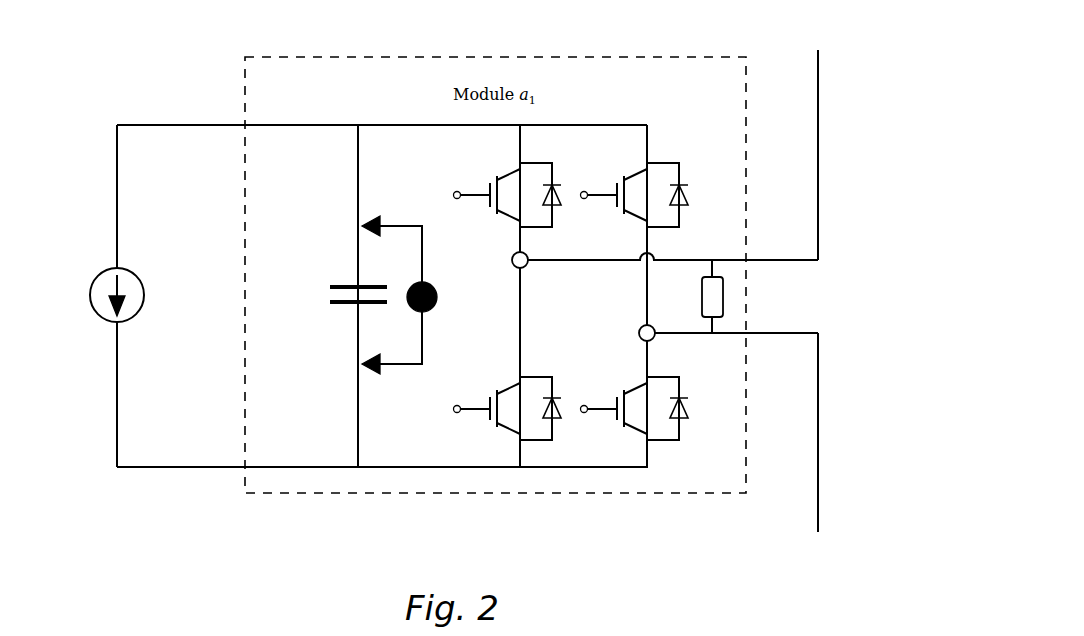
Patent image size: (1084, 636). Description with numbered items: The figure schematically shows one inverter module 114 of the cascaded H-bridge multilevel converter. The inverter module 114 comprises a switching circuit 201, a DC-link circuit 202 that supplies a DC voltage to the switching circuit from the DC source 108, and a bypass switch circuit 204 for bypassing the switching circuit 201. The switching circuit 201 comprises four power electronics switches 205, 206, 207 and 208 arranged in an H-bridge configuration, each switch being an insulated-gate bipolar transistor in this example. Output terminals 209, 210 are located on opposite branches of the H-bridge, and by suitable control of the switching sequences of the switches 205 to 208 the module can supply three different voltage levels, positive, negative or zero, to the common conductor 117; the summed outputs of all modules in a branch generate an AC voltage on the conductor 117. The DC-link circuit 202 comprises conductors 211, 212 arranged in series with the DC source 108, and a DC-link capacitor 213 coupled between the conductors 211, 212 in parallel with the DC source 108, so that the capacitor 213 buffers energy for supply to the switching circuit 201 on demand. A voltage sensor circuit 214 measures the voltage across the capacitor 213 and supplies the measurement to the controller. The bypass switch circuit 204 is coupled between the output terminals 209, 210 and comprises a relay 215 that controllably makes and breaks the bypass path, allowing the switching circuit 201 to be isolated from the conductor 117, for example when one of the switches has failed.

The DC source 108 is at (107, 268).
The inverter module 114 is at (305, 105).
The common conductor 117 is at (820, 447).
The switching circuit 201 is at (606, 484).
The DC-link circuit 202 is at (347, 490).
The bypass switch circuit 204 is at (737, 289).
The power electronics switch 205 is at (542, 162).
The power electronics switch 206 is at (662, 162).
The power electronics switch 207 is at (536, 441).
The power electronics switch 208 is at (663, 441).
The output terminal 209 is at (528, 259).
The output terminal 210 is at (657, 334).
The conductor 211 is at (223, 125).
The conductor 212 is at (308, 468).
The DC-link capacitor 213 is at (330, 301).
The voltage sensor circuit 214 is at (408, 365).
The relay 215 is at (723, 298).